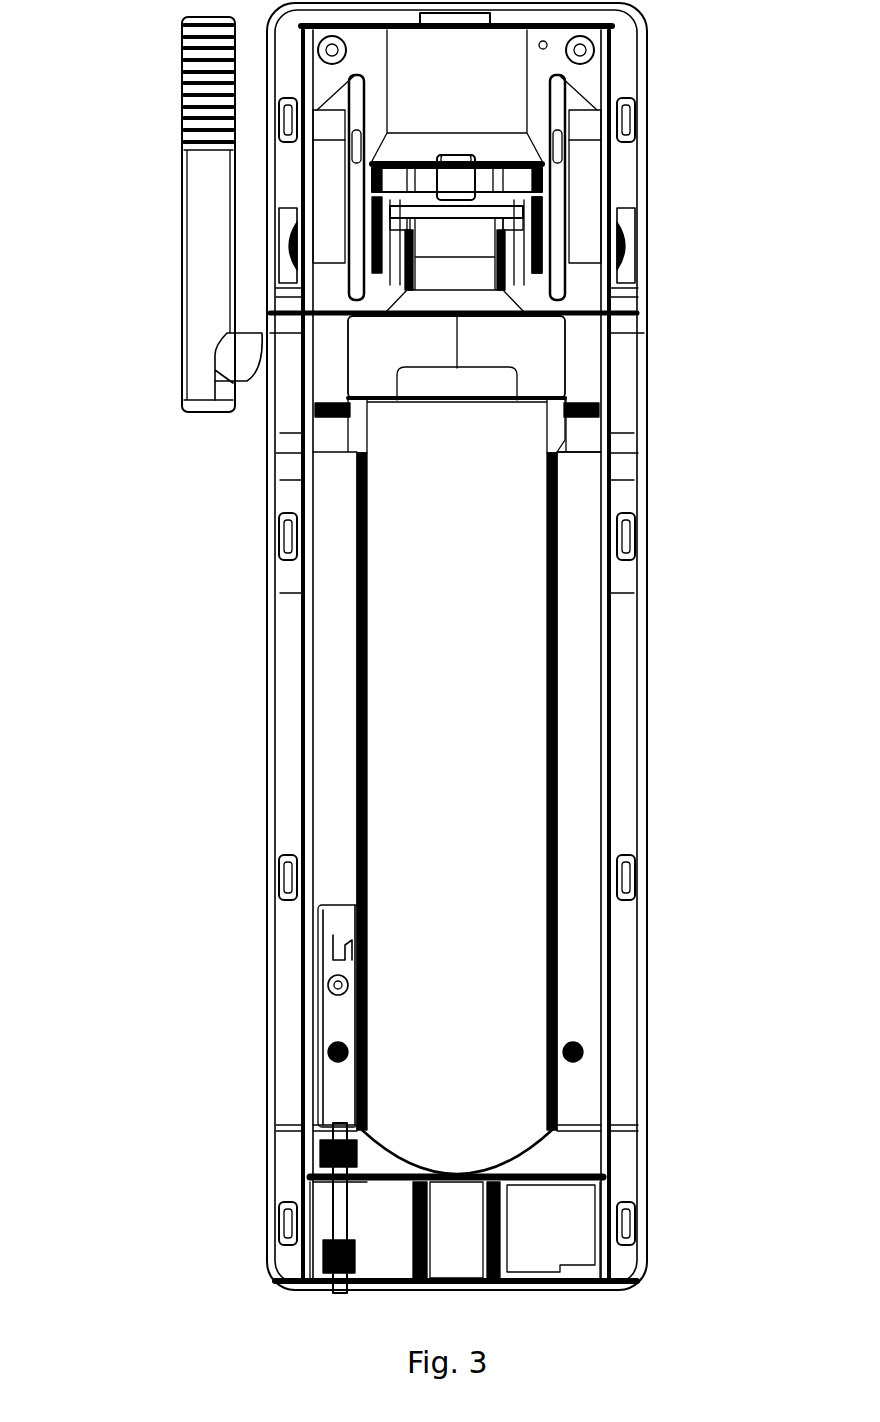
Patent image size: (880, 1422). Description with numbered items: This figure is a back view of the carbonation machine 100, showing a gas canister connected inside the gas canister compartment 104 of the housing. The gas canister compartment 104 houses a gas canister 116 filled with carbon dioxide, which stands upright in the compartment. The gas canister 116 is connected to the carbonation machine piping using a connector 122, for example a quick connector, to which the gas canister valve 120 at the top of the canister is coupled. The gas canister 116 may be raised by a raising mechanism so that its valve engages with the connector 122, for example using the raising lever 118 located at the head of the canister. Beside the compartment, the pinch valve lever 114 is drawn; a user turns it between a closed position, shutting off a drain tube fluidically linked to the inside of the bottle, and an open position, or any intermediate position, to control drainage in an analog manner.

The carbonation machine 100 is at (207, 582).
The gas canister compartment 104 is at (643, 825).
The pinch valve lever 114 is at (182, 237).
The gas canister 116 is at (545, 675).
The raising lever 118 is at (563, 350).
The gas canister valve 120 is at (482, 188).
The connector 122 is at (508, 203).